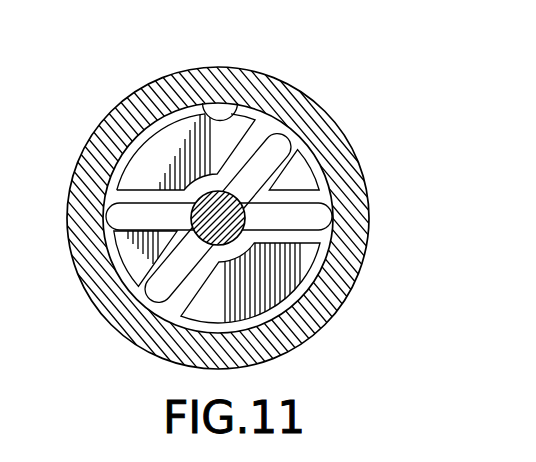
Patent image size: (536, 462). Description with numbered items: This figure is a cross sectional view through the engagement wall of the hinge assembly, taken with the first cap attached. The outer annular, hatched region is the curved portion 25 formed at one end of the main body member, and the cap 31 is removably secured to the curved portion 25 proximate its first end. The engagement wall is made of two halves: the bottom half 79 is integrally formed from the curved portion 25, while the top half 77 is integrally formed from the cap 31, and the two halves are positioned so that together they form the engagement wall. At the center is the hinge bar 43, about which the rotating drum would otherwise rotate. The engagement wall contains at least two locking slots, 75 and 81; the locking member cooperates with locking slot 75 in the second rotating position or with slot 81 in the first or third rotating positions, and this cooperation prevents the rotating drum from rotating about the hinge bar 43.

The curved portion 25 is at (349, 290).
The cap 31 is at (297, 96).
The hinge bar 43 is at (218, 192).
The locking slot 75 is at (141, 296).
The top half 77 is at (190, 112).
The bottom half 79 is at (266, 288).
The locking slot 81 is at (320, 214).